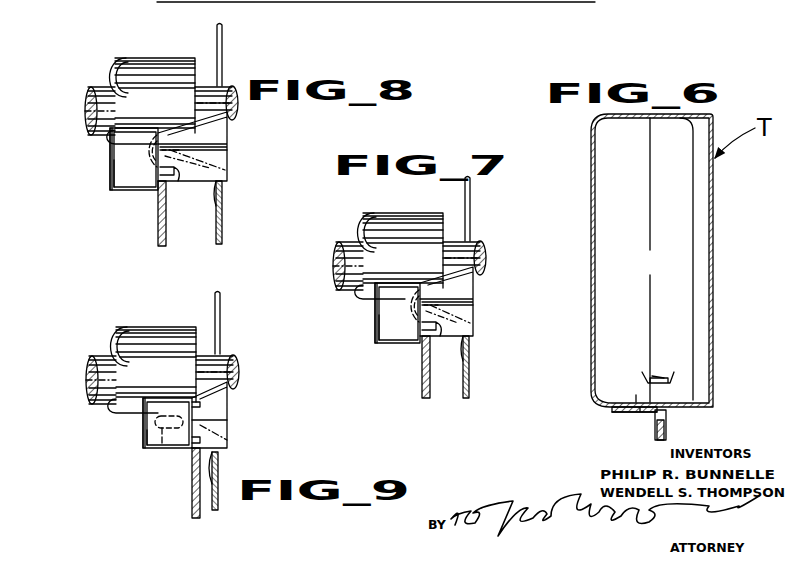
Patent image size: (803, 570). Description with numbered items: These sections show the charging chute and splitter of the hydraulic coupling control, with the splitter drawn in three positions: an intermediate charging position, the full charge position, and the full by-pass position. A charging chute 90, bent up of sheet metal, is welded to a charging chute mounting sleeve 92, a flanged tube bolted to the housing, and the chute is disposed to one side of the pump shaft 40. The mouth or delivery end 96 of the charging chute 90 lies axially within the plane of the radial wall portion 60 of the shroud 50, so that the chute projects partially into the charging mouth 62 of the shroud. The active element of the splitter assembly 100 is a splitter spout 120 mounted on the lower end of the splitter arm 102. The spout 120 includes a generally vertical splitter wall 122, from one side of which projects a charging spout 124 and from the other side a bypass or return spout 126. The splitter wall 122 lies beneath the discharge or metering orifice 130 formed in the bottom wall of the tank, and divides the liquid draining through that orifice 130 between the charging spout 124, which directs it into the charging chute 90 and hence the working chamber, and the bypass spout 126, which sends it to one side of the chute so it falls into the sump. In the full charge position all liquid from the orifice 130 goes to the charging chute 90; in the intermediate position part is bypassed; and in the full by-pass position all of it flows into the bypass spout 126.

In FIG. 8, the pump shaft 40 is at (228, 121).
In FIG. 7, the pump shaft 40 is at (507, 282).
In FIG. 9, the pump shaft 40 is at (230, 370).
In FIG. 8, the shroud 50 is at (225, 52).
In FIG. 7, the shroud 50 is at (508, 209).
In FIG. 9, the shroud 50 is at (224, 298).
In FIG. 8, the radial wall portion 60 is at (224, 211).
In FIG. 7, the radial wall portion 60 is at (497, 368).
In FIG. 9, the radial wall portion 60 is at (218, 508).
In FIG. 8, the charging mouth 62 is at (224, 184).
In FIG. 7, the charging mouth 62 is at (496, 357).
In FIG. 9, the charging mouth 62 is at (219, 490).
In FIG. 8, the charging chute 90 is at (228, 150).
In FIG. 7, the charging chute 90 is at (478, 302).
In FIG. 9, the charging chute 90 is at (215, 425).
In FIG. 8, the charging chute mounting sleeve 92 is at (154, 63).
In FIG. 7, the charging chute mounting sleeve 92 is at (409, 242).
In FIG. 9, the charging chute mounting sleeve 92 is at (172, 342).
In FIG. 8, the mouth or delivery end of the charging chute 96 is at (226, 156).
In FIG. 7, the mouth or delivery end of the charging chute 96 is at (481, 320).
In FIG. 9, the mouth or delivery end of the charging chute 96 is at (222, 440).
In FIG. 8, the splitter assembly 100 is at (108, 175).
In FIG. 7, the splitter assembly 100 is at (363, 325).
In FIG. 9, the splitter assembly 100 is at (141, 446).
In FIG. 6, the splitter assembly 100 is at (611, 416).
In FIG. 8, the splitter arm 102 is at (157, 239).
In FIG. 7, the splitter arm 102 is at (391, 367).
In FIG. 9, the splitter arm 102 is at (191, 510).
In FIG. 6, the splitter arm 102 is at (668, 430).
In FIG. 8, the splitter spout 120 is at (108, 150).
In FIG. 7, the splitter spout 120 is at (342, 314).
In FIG. 9, the splitter spout 120 is at (141, 453).
In FIG. 6, the splitter spout 120 is at (611, 409).
In FIG. 8, the splitter wall 122 is at (170, 134).
In FIG. 7, the splitter wall 122 is at (436, 293).
In FIG. 9, the splitter wall 122 is at (200, 404).
In FIG. 8, the charging spout 124 is at (176, 172).
In FIG. 7, the charging spout 124 is at (453, 351).
In FIG. 9, the charging spout 124 is at (205, 420).
In FIG. 6, the charging spout 124 is at (668, 376).
In FIG. 8, the bypass or return spout 126 is at (128, 178).
In FIG. 7, the bypass or return spout 126 is at (381, 346).
In FIG. 9, the bypass or return spout 126 is at (168, 452).
In FIG. 6, the bypass or return spout 126 is at (636, 407).
In FIG. 8, the discharge or metering orifice 130 is at (214, 162).
In FIG. 7, the discharge or metering orifice 130 is at (479, 323).
In FIG. 9, the discharge or metering orifice 130 is at (162, 445).
In FIG. 6, the discharge or metering orifice 130 is at (648, 380).